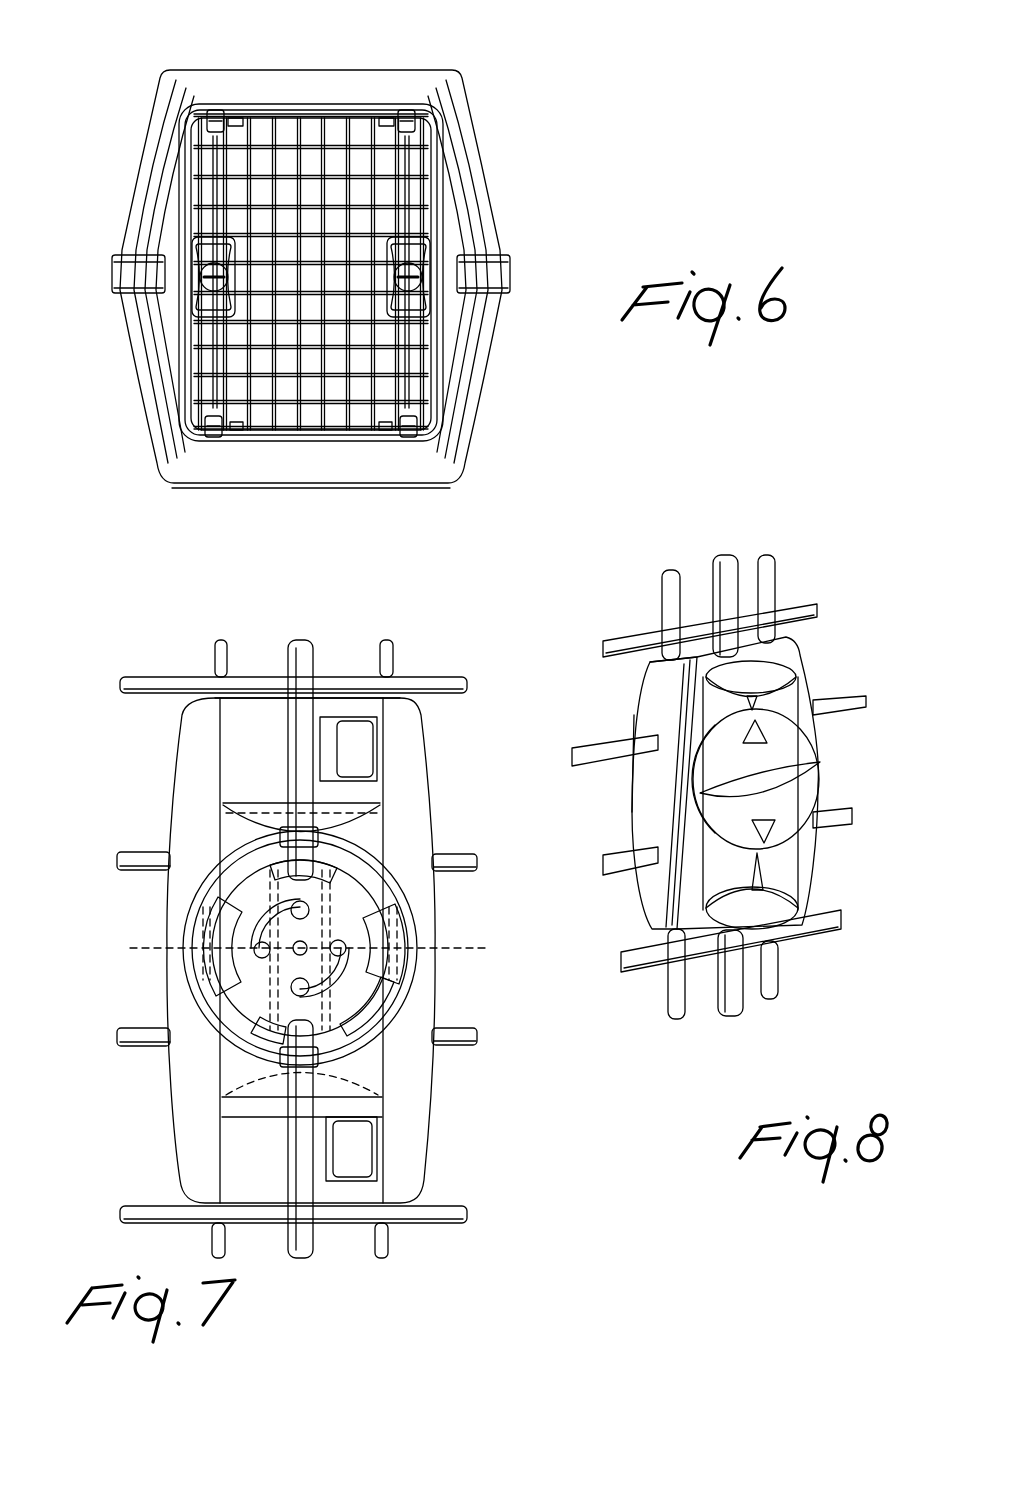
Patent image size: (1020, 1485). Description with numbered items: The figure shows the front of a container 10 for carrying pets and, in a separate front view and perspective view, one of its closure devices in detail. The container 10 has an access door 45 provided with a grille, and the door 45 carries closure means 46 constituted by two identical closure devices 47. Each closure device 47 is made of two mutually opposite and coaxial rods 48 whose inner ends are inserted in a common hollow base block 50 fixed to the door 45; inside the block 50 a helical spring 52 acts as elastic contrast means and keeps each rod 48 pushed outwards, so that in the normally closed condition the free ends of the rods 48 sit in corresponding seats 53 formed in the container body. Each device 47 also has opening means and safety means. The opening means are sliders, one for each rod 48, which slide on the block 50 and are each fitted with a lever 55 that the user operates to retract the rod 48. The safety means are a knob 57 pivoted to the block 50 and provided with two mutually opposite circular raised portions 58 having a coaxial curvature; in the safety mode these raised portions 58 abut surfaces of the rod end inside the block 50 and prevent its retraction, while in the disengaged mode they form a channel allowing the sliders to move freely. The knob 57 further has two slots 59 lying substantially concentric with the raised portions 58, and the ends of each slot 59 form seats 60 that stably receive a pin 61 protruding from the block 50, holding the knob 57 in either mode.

In FIG. 6, the container 10 is at (524, 242).
In FIG. 6, the access door 45 is at (284, 205).
In FIG. 7, the access door 45 is at (433, 668).
In FIG. 8, the access door 45 is at (828, 928).
In FIG. 6, the closure means 46 is at (180, 228).
In FIG. 6, the closure device 47 is at (442, 310).
In FIG. 7, the closure device 47 is at (546, 1138).
In FIG. 8, the closure device 47 is at (606, 698).
In FIG. 7, the rod 48 is at (302, 645).
In FIG. 8, the rod 48 is at (724, 572).
In FIG. 7, the base block 50 is at (158, 924).
In FIG. 8, the base block 50 is at (622, 804).
In FIG. 7, the helical spring 52 is at (286, 832).
In FIG. 6, the seat 53 is at (214, 110).
In FIG. 7, the lever 55 is at (353, 815).
In FIG. 8, the lever 55 is at (800, 658).
In FIG. 7, the knob 57 is at (372, 858).
In FIG. 8, the knob 57 is at (772, 772).
In FIG. 7, the circular raised portion 58 is at (330, 862).
In FIG. 7, the slot 59 is at (258, 953).
In FIG. 7, the seat 60 is at (290, 864).
In FIG. 7, the pin 61 is at (296, 994).